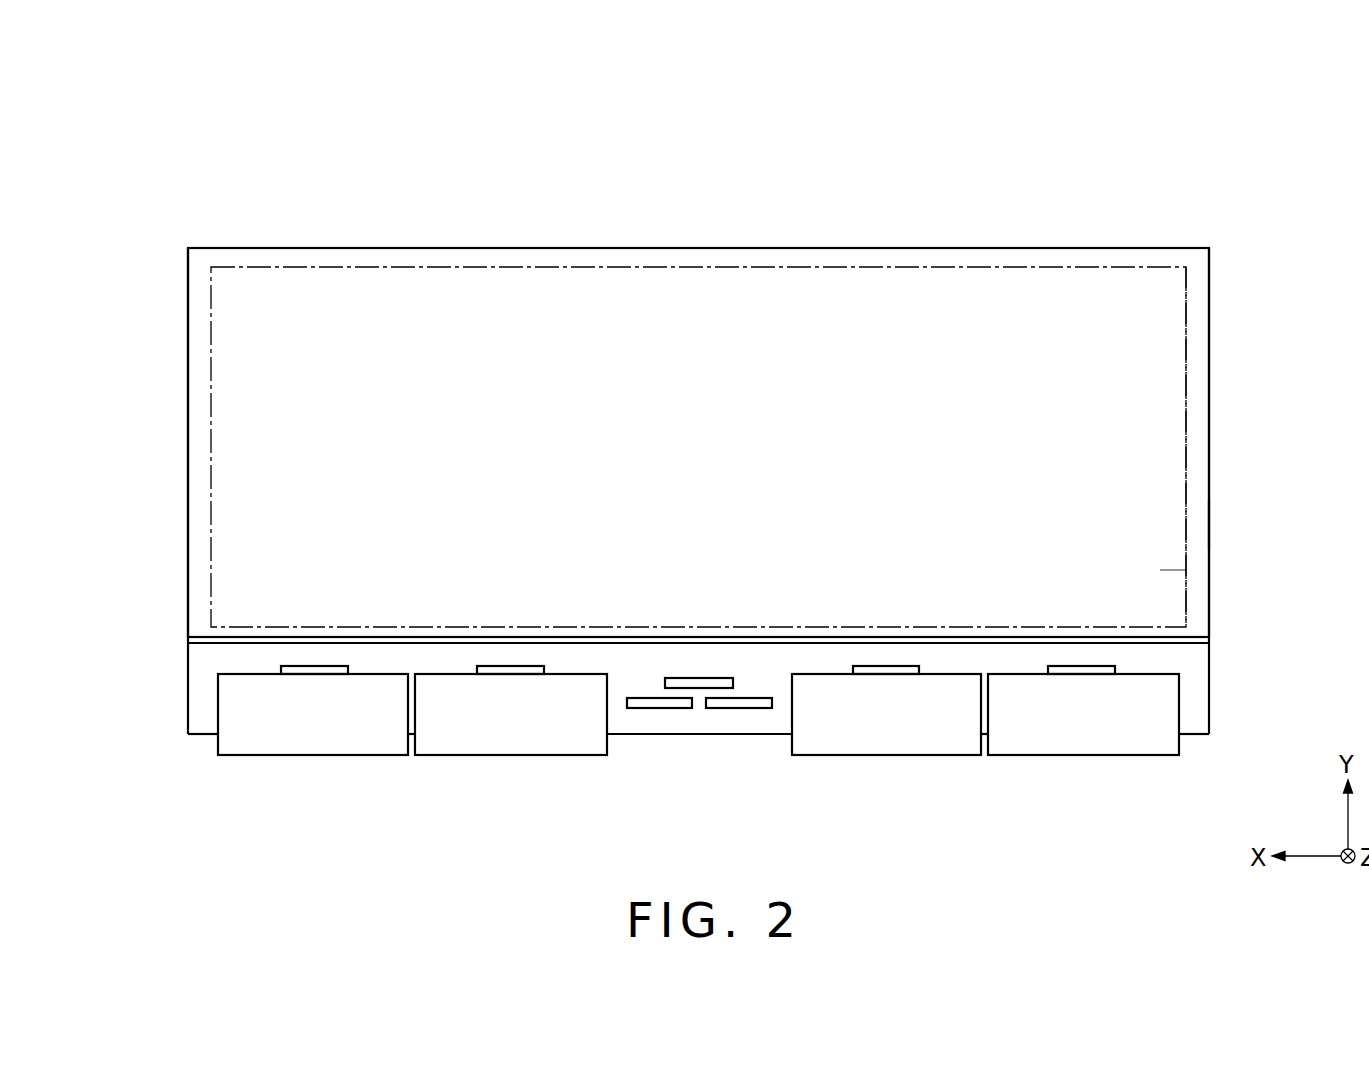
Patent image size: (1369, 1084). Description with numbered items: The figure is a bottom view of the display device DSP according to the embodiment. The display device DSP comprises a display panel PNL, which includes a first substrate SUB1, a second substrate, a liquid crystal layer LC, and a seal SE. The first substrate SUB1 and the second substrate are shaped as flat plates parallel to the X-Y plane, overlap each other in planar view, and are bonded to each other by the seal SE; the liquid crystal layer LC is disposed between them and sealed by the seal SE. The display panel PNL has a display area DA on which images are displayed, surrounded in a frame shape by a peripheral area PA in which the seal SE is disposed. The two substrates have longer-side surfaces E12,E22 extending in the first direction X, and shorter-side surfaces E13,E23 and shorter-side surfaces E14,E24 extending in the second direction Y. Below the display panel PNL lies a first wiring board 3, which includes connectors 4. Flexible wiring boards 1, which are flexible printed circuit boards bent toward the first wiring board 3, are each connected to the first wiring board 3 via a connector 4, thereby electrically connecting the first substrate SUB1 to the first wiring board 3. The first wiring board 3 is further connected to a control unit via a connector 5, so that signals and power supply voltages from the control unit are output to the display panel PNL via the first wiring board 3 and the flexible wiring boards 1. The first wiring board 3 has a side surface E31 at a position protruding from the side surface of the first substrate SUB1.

The display device DSP is at (1183, 150).
The display panel PNL is at (1172, 247).
The side surfaces of the first and second substrates extending in the first directio E12,E22 is at (923, 247).
The side surfaces of the first and second substrates extending in the second directi E14,E24 is at (187, 273).
The side surfaces of the first and second substrates extending in the second directi E13,E23 is at (1210, 338).
The display area DA is at (1157, 440).
The peripheral area PA is at (1190, 481).
The seal SE is at (1198, 525).
The liquid crystal layer LC is at (1160, 570).
The first substrate SUB1 is at (1196, 617).
The first wiring board 3 is at (1193, 734).
The side surface of the first wiring board E31 is at (770, 735).
The flexible wiring board 1 is at (297, 756).
The connector 4 is at (333, 674).
The connector 5 is at (699, 688).